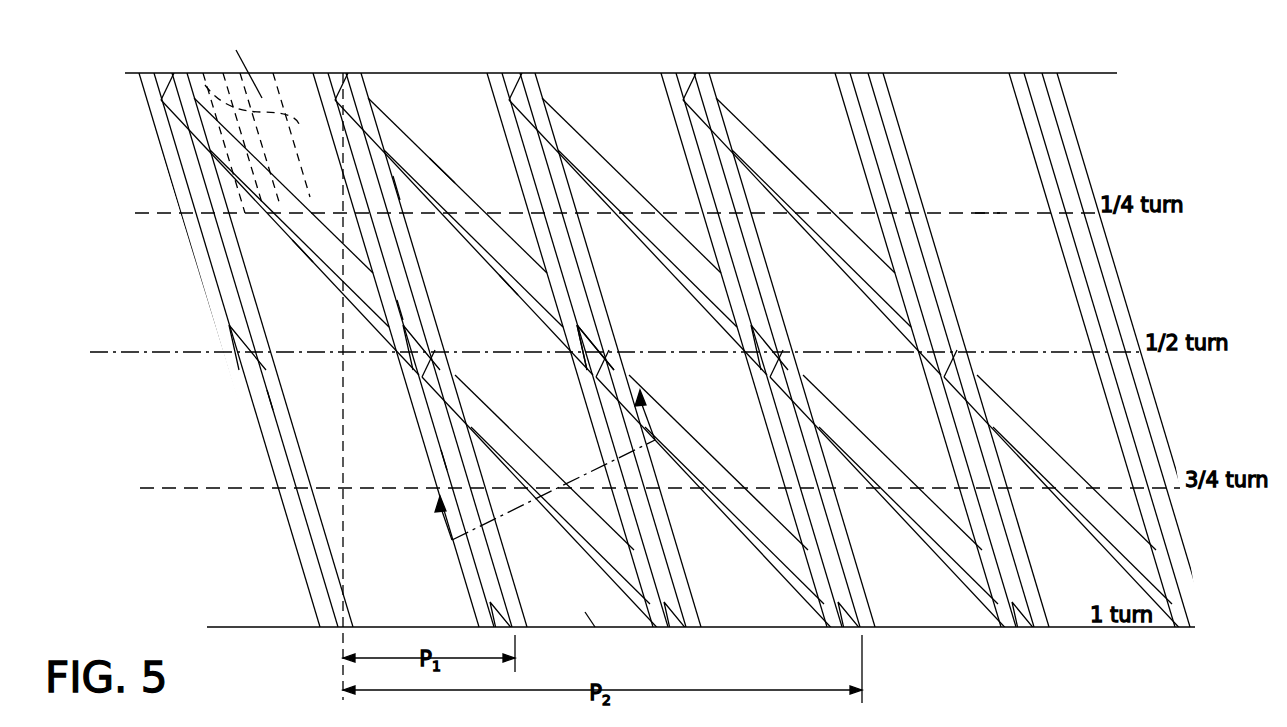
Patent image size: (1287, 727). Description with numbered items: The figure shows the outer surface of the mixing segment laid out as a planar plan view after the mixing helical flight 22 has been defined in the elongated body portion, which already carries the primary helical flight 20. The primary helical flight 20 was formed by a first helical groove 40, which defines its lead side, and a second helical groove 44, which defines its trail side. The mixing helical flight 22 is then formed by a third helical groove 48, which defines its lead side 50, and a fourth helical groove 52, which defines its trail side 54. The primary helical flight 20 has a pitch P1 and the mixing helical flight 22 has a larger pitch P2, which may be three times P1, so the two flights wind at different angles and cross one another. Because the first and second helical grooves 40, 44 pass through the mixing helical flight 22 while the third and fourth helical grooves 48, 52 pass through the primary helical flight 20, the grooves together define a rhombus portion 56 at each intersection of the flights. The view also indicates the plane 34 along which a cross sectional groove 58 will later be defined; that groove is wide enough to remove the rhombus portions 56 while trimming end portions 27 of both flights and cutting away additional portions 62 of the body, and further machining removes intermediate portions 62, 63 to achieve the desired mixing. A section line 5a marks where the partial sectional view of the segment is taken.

The primary helical flight 20 is at (388, 233).
The mixing helical flight 22 is at (322, 252).
The end portions 27 is at (348, 306).
The plane 34 is at (256, 75).
The first helical groove 40 is at (283, 393).
The second helical groove 44 is at (438, 455).
The third helical groove 48 is at (440, 172).
The lead side 50 is at (528, 432).
The fourth helical groove 52 is at (512, 285).
The trail side 54 is at (595, 625).
The rhombus portion 56 is at (340, 75).
The cross sectional groove 58 is at (204, 84).
The additional portions 62 is at (432, 78).
The intermediate portions 63 is at (688, 391).
The section line 5a is at (537, 451).